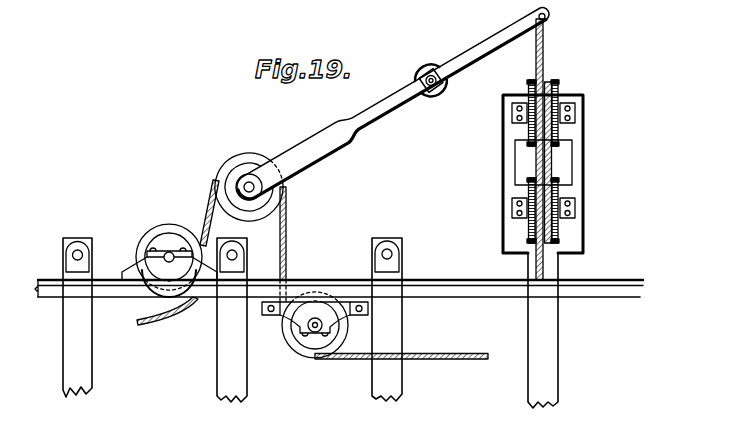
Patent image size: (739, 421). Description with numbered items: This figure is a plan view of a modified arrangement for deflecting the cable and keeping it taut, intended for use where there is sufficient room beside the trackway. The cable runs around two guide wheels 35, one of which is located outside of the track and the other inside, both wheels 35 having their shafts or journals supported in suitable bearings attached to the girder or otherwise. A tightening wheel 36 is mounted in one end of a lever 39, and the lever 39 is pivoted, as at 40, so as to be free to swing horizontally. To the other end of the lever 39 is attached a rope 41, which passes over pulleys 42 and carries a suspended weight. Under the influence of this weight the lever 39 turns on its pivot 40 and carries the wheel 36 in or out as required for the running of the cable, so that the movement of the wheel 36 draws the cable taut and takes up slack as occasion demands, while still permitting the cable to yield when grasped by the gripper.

The wheel 35 is at (148, 232).
The wheel 36 is at (242, 156).
The lever 39 is at (346, 138).
The pivot 40 is at (432, 70).
The rope 41 is at (543, 63).
The pulleys 42 is at (545, 166).